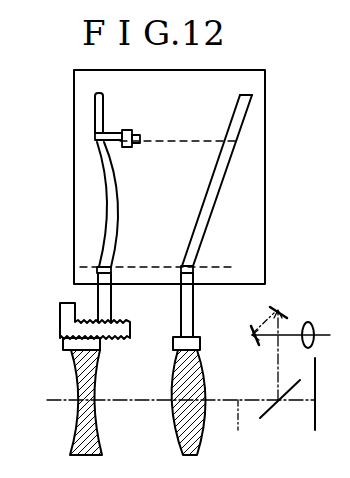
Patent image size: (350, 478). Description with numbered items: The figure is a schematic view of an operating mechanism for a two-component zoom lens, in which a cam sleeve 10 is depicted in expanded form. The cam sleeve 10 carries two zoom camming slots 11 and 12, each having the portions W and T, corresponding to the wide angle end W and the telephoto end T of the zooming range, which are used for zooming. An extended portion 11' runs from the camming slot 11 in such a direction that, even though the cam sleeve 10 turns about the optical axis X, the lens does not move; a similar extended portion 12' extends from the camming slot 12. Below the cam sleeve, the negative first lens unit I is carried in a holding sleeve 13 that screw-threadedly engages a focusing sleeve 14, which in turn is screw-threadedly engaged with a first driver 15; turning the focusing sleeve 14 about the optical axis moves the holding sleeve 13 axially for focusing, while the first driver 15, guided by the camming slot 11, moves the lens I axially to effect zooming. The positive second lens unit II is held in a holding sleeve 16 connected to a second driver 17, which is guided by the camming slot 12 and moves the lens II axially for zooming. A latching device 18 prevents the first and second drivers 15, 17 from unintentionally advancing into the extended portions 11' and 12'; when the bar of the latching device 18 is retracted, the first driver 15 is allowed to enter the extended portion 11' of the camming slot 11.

The cam sleeve 10 is at (265, 165).
The zoom camming slot 11 is at (130, 204).
The extended portion 11' is at (117, 114).
The zoom camming slot 12 is at (222, 180).
The extended portion 12' is at (222, 99).
The holding sleeve 13 is at (63, 345).
The focusing sleeve 14 is at (62, 312).
The first driver 15 is at (111, 300).
The holding sleeve 16 is at (200, 342).
The second driver 17 is at (194, 301).
The latching device 18 is at (127, 130).
The wide angle end W is at (189, 148).
The telephoto end T is at (165, 268).
The negative first lens unit I is at (100, 370).
The positive second lens unit II is at (203, 372).
The optical axis X is at (237, 426).